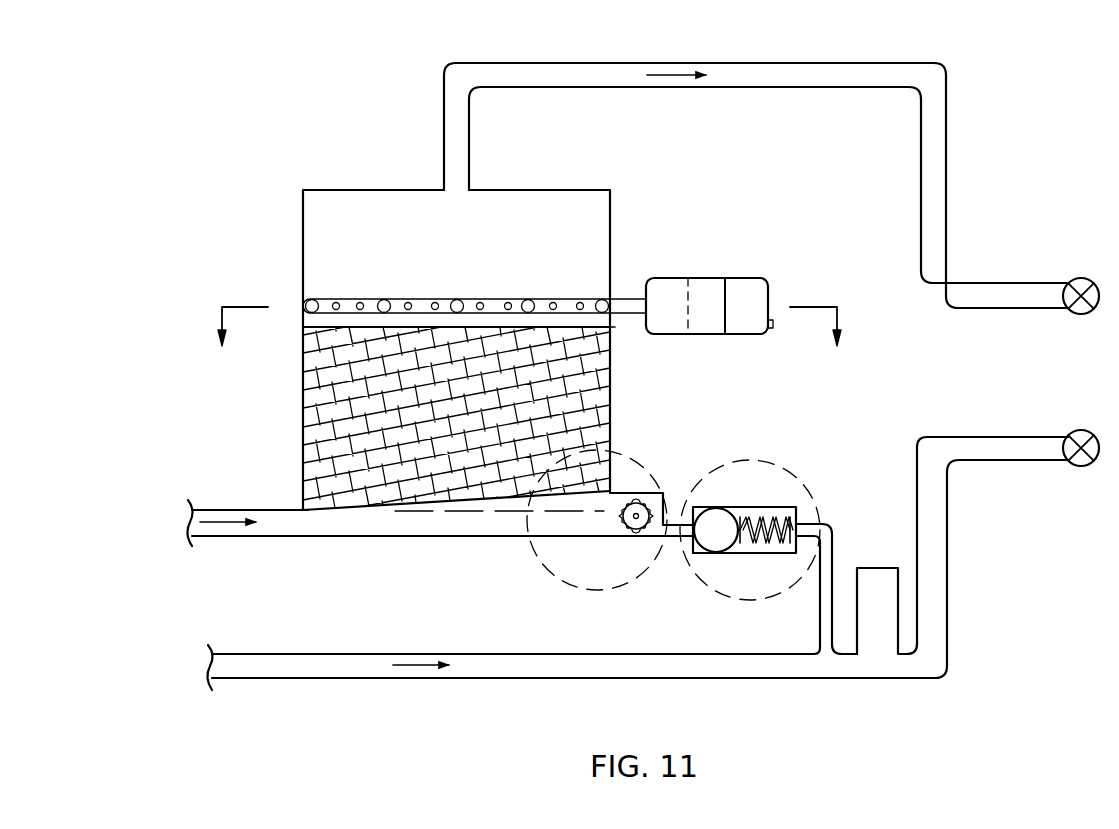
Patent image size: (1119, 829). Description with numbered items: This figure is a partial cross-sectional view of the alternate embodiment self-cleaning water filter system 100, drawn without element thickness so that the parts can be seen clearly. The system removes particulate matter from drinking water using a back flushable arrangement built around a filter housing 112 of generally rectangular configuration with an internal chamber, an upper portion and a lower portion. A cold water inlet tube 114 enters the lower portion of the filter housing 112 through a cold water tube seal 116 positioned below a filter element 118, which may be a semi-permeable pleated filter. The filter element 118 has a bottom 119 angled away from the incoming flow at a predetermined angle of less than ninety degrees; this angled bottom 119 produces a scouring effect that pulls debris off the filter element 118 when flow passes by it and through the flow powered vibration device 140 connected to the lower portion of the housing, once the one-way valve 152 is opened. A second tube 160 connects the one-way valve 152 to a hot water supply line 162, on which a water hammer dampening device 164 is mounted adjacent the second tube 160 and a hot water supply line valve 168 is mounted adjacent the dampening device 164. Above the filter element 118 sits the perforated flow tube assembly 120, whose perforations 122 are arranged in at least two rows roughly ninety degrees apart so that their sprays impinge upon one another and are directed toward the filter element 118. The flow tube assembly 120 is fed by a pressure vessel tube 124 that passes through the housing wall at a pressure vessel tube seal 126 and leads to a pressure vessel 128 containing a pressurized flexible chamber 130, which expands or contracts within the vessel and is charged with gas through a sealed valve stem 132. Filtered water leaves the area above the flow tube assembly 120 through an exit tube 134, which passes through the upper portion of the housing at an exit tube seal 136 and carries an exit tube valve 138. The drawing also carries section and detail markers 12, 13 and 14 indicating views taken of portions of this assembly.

The self-cleaning water filter system 100 is at (250, 97).
The filter housing 112 is at (303, 228).
The cold water inlet tube 114 is at (230, 537).
The cold water tube seal 116 is at (300, 508).
The filter element 118 is at (322, 425).
The bottom 119 is at (478, 502).
The perforated flow tube assembly 120 is at (423, 300).
The perforations 122 is at (336, 299).
The pressure vessel tube 124 is at (613, 298).
The pressure vessel tube seal 126 is at (613, 297).
The pressure vessel 128 is at (708, 278).
The flexible chamber 130 is at (728, 305).
The valve stem 132 is at (772, 327).
The exit tube 134 is at (590, 62).
The exit tube seal 136 is at (443, 188).
The exit tube valve 138 is at (1082, 277).
The flow powered vibration device 140 is at (637, 500).
The detail region of FIG. 13 is at (563, 573).
The detail region of FIG. 14 is at (793, 477).
The section line 12- 12 is at (534, 347).
The one-way valve 152 is at (747, 553).
The second tube 160 is at (820, 600).
The hot water supply line 162 is at (361, 680).
The water hammer dampening device 164 is at (878, 607).
The hot water supply line valve 168 is at (1083, 467).